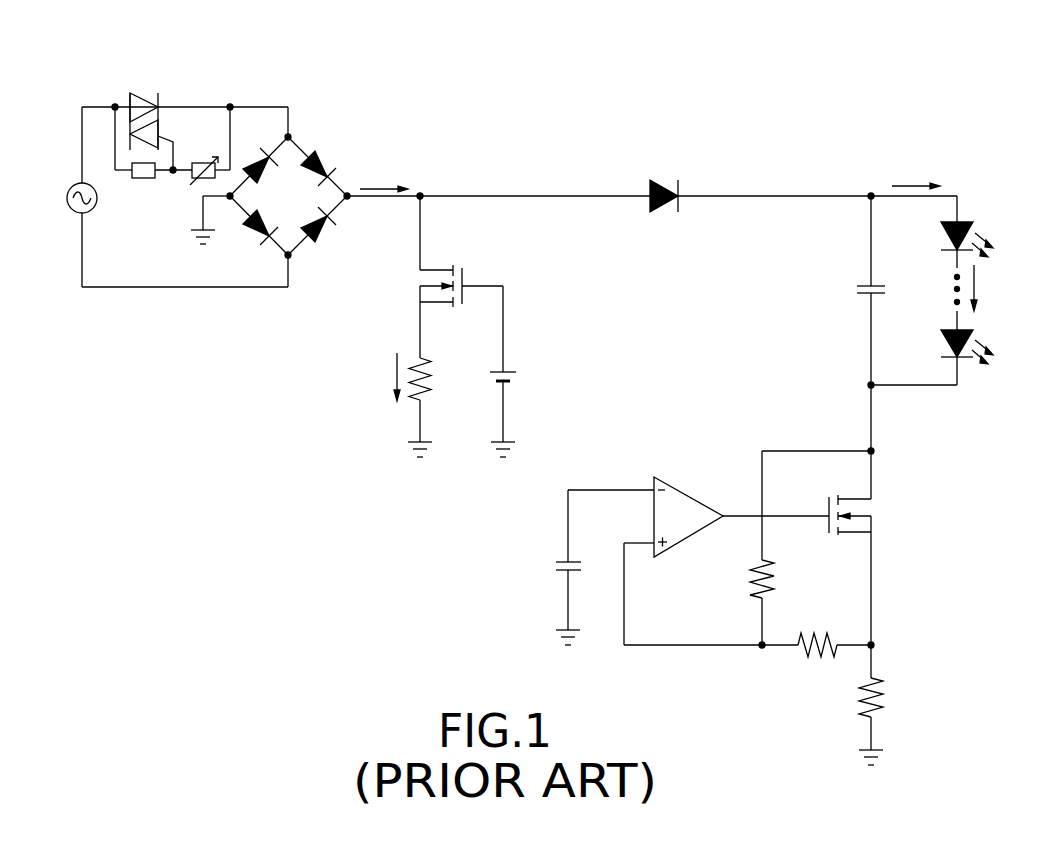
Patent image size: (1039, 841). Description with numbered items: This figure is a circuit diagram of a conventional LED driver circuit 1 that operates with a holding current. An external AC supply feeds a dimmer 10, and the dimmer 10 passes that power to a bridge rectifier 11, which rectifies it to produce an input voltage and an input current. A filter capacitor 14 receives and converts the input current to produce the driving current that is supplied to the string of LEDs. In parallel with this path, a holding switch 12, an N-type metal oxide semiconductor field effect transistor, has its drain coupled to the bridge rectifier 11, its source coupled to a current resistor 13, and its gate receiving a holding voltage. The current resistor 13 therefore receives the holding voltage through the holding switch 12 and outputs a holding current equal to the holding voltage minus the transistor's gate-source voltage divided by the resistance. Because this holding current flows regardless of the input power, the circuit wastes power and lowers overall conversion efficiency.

The driver circuit 1 is at (27, 53).
The dimmer 10 is at (159, 99).
The bridge rectifier 11 is at (300, 148).
The holding switch 12 is at (465, 277).
The current resistor 13 is at (418, 360).
The filter capacitor 14 is at (860, 286).